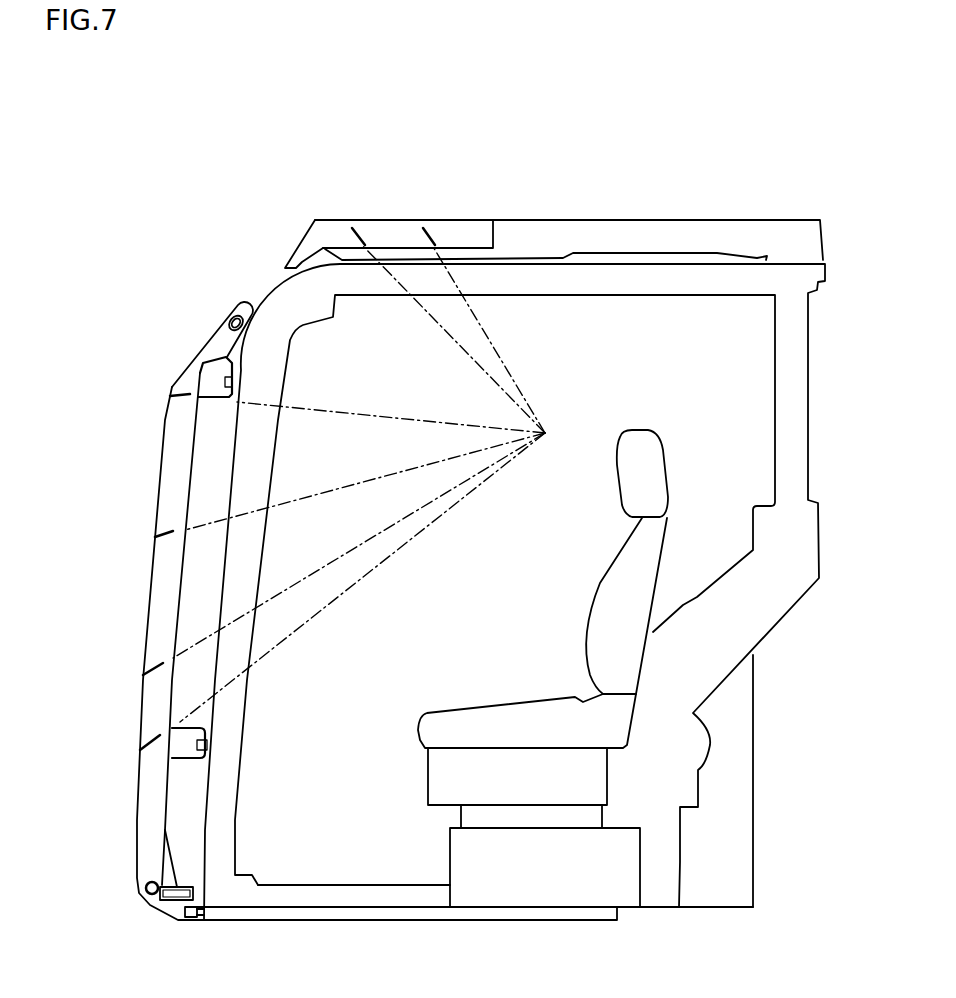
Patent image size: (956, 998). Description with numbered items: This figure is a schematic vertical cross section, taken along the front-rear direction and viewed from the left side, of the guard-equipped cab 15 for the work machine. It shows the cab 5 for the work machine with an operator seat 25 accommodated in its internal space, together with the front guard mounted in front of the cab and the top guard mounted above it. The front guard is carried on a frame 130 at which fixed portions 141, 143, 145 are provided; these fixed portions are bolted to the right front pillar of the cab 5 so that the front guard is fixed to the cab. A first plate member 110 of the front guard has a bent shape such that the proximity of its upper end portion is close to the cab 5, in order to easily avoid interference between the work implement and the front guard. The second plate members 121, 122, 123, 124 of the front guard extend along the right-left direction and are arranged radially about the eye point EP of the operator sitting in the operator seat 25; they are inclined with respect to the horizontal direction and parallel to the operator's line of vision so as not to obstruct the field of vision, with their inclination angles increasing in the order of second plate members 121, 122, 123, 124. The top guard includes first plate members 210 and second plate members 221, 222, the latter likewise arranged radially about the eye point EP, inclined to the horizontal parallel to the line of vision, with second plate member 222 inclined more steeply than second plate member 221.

The cab for the work machine 5 is at (670, 350).
The guard-equipped cab 15 is at (763, 173).
The operator seat 25 is at (508, 725).
The first plate member 110 is at (178, 468).
The second plate member 121 is at (180, 398).
The second plate member 122 is at (165, 535).
The second plate member 123 is at (155, 672).
The second plate member 124 is at (150, 742).
The frame 130 is at (252, 310).
The fixed portion 141 is at (207, 372).
The fixed portion 143 is at (183, 762).
The fixed portion 145 is at (175, 908).
The first plate member 210 is at (407, 240).
The second plate member 221 is at (432, 233).
The second plate member 222 is at (363, 226).
The eye point EP is at (547, 432).